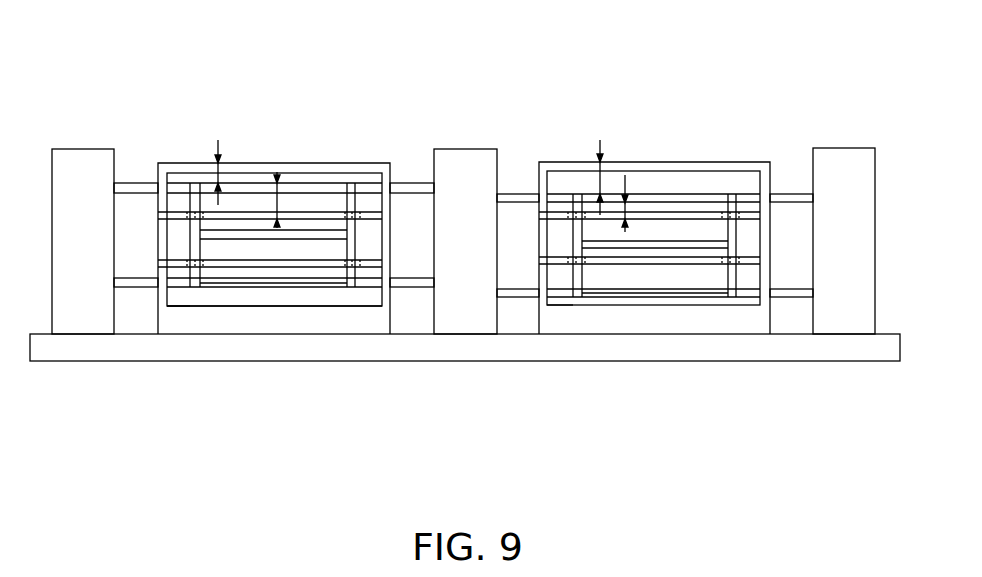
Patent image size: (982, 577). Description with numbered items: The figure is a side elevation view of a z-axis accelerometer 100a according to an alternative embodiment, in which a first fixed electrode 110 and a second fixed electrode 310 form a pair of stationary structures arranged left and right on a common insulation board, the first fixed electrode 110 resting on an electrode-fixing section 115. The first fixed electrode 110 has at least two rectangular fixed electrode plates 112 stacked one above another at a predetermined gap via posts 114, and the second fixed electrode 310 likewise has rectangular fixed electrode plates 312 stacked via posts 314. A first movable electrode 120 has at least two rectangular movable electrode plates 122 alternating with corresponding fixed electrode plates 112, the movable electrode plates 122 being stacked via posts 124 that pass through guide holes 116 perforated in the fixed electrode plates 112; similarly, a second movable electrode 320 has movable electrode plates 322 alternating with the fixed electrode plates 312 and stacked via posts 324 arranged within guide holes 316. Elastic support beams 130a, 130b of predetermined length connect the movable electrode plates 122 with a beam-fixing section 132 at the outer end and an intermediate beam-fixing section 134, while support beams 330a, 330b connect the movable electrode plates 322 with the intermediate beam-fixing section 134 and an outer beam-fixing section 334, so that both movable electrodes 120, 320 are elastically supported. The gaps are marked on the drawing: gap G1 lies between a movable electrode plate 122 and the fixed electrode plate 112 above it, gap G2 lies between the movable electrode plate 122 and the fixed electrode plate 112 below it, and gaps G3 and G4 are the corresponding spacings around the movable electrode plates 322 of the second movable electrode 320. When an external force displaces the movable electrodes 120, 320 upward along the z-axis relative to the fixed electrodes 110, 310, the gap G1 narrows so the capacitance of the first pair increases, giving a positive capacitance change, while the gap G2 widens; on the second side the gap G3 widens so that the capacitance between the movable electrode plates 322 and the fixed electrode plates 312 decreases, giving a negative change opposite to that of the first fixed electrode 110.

The accelerometer 100a is at (824, 34).
The first fixed electrode 110 is at (372, 127).
The fixed electrode plates 112 is at (323, 267).
The posts 114 is at (383, 240).
The electrode-fixing section 115 is at (302, 322).
The guide holes 116 is at (193, 262).
The first movable electrode 120 is at (290, 271).
The movable electrode plates 122 is at (238, 283).
The posts 124 is at (353, 242).
The support beam 130a is at (135, 285).
The support beam 130b is at (420, 190).
The beam-fixing section 132 is at (80, 148).
The intermediate beam-fixing section 134 is at (470, 148).
The gap G1 is at (234, 172).
The gap G2 is at (261, 200).
The gap G3 is at (640, 201).
The fourth gap G4 is at (587, 177).
The second fixed electrode 310 is at (669, 280).
The fixed electrode plates 312 is at (705, 262).
The posts 314 is at (543, 255).
The guide holes 316 is at (573, 297).
The second movable electrode 320 is at (636, 140).
The movable electrode plates 322 is at (650, 248).
The posts 324 is at (733, 278).
The support beam 330a is at (517, 298).
The support beam 330b is at (800, 293).
The beam-fixing section 334 is at (850, 148).